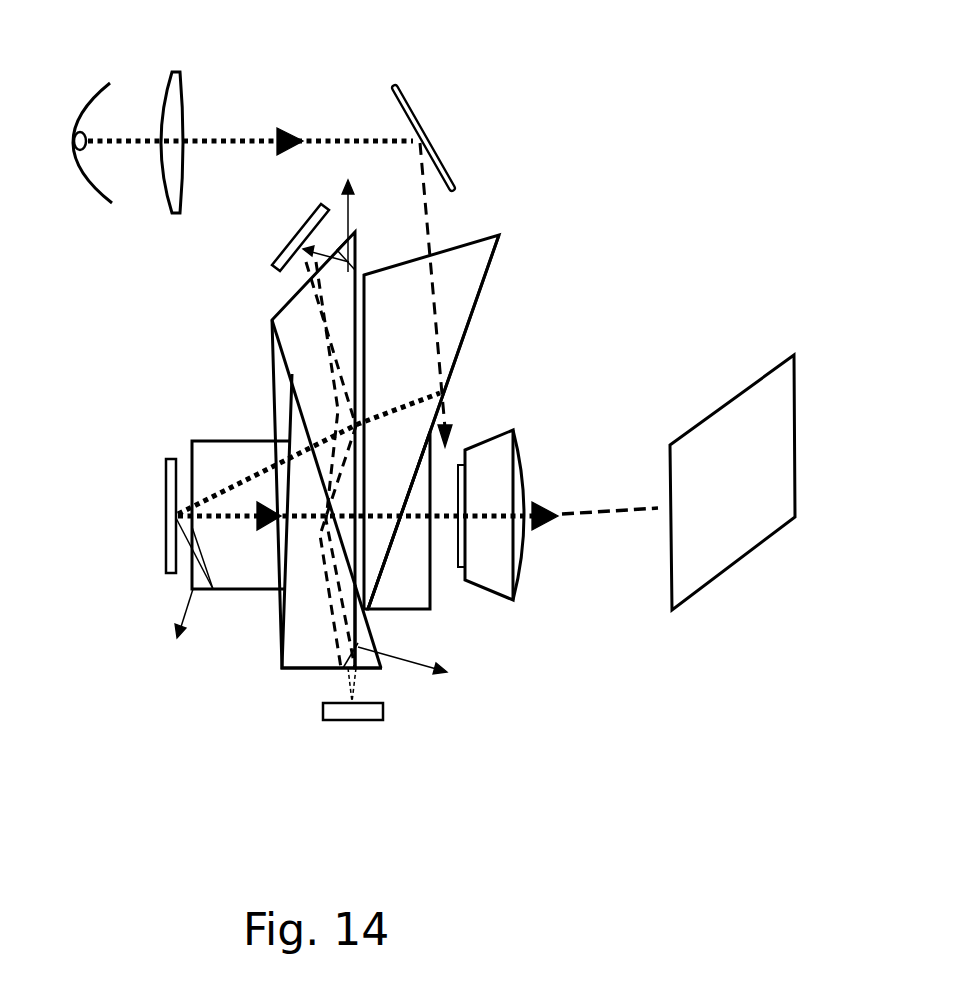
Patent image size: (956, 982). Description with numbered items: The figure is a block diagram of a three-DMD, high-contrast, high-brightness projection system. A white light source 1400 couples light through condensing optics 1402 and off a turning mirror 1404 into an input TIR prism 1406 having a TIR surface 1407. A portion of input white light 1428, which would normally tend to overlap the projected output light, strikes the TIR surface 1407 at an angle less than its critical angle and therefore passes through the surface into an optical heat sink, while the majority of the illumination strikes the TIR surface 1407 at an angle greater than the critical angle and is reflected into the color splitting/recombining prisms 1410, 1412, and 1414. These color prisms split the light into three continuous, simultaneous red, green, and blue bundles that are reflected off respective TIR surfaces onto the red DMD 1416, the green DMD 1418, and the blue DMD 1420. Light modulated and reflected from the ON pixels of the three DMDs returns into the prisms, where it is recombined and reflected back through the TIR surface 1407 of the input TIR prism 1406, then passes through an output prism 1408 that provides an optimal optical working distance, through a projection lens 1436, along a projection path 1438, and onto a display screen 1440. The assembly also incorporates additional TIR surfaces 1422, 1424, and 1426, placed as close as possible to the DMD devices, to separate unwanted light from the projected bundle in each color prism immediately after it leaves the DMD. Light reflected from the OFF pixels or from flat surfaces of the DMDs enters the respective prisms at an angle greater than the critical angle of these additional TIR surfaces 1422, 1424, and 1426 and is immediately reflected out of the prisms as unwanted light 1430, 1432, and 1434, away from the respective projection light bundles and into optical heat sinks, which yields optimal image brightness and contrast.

The white light source 1400 is at (92, 187).
The condensing optics 1402 is at (182, 112).
The turning mirror 1404 is at (398, 90).
The input TIR prism 1406 is at (478, 238).
The TIR surface 1407 is at (478, 302).
The output prism 1408 is at (432, 600).
The color splitting/recombining prism 1410 is at (290, 590).
The color splitting/recombining prism 1412 is at (230, 438).
The color splitting/recombining prism 1414 is at (280, 355).
The red DMD 1416 is at (343, 722).
The green DMD 1418 is at (165, 472).
The blue DMD 1420 is at (272, 273).
The TIR surface 1422 is at (372, 643).
The TIR surface 1424 is at (203, 592).
The TIR surface 1426 is at (358, 251).
The portion of input white light 1428 is at (448, 420).
The unwanted light 1430 is at (448, 667).
The unwanted light 1432 is at (183, 602).
The unwanted light 1434 is at (360, 200).
The projection lens 1436 is at (514, 497).
The projection path 1438 is at (603, 517).
The display screen 1440 is at (770, 532).